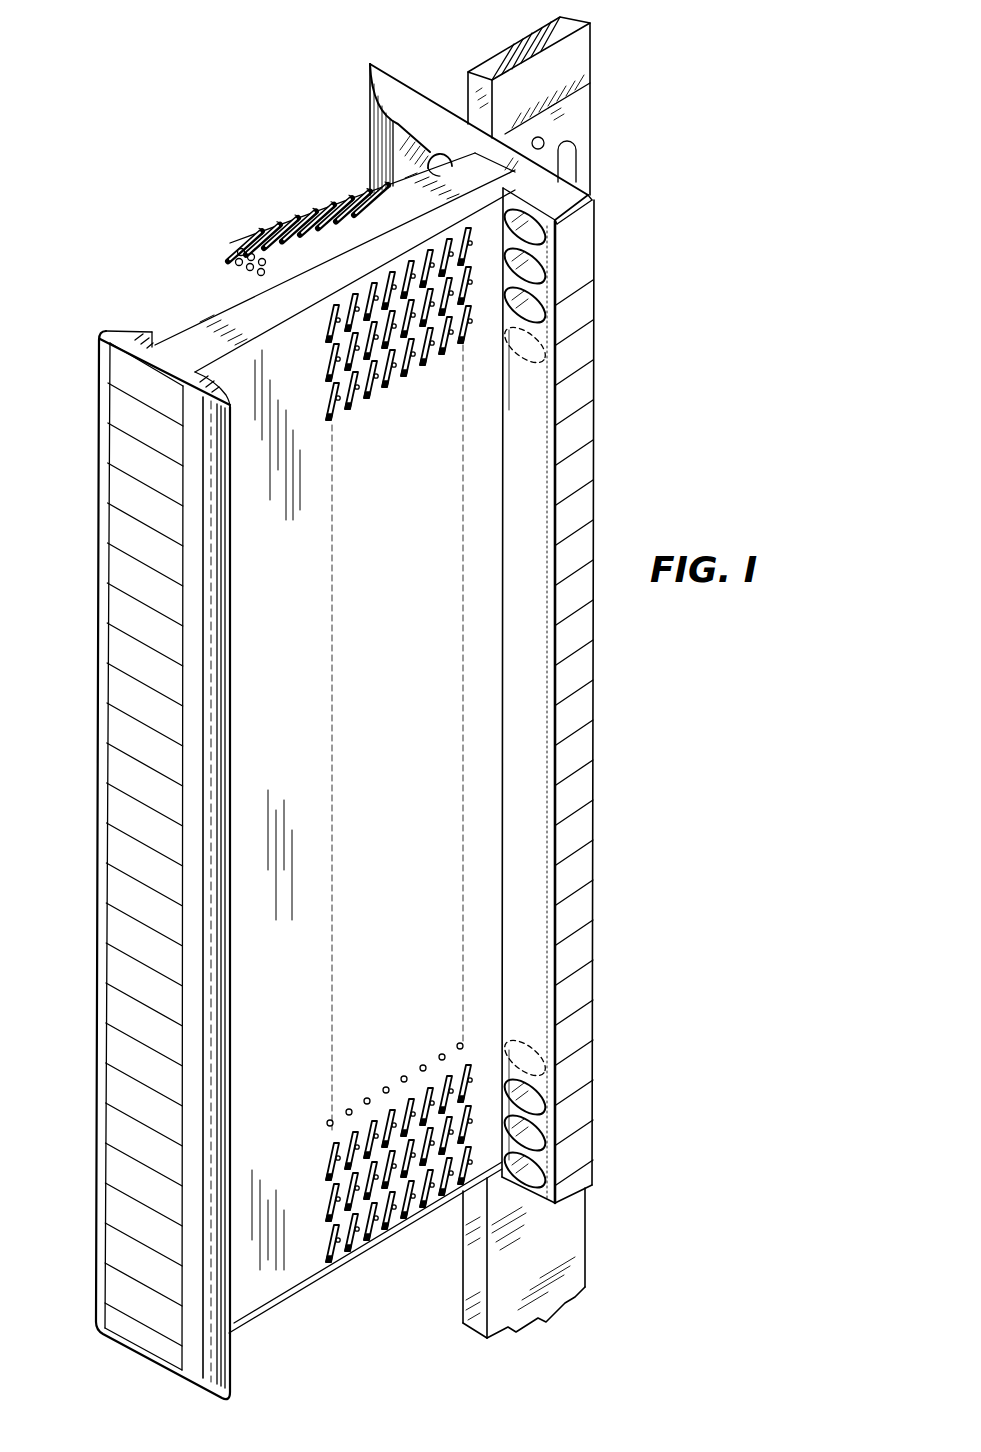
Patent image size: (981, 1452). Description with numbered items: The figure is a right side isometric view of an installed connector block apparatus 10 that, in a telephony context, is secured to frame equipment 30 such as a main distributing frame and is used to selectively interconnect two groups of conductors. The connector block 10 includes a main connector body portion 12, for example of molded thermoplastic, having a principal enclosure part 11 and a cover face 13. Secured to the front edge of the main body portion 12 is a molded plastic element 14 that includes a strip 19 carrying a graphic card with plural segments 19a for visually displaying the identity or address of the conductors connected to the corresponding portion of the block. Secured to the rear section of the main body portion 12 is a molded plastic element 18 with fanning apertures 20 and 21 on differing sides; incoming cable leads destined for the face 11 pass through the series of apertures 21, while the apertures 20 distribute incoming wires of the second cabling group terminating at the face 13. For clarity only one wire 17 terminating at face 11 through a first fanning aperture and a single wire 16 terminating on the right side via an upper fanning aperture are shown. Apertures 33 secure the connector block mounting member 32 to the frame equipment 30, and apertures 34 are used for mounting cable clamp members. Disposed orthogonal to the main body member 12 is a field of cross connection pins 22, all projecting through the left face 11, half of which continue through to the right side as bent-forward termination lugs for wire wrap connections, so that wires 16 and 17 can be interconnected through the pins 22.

The connector block apparatus 10 is at (221, 168).
The principal enclosure part 11 is at (226, 281).
The main connector body portion 12 is at (198, 333).
The cover face 13 is at (394, 262).
The molded plastic element 14 is at (134, 334).
The wire 16 is at (598, 184).
The wire 17 is at (289, 212).
The molded plastic element 18 is at (586, 207).
The strip 19 is at (124, 683).
The segments 19a is at (123, 375).
The fanning apertures 20 is at (513, 203).
The fanning apertures 21 is at (434, 153).
The cross connection pins 22 is at (464, 247).
The frame equipment 30 is at (578, 57).
The connector block mounting member 32 is at (552, 101).
The apertures 33 is at (542, 140).
The apertures 34 is at (582, 152).